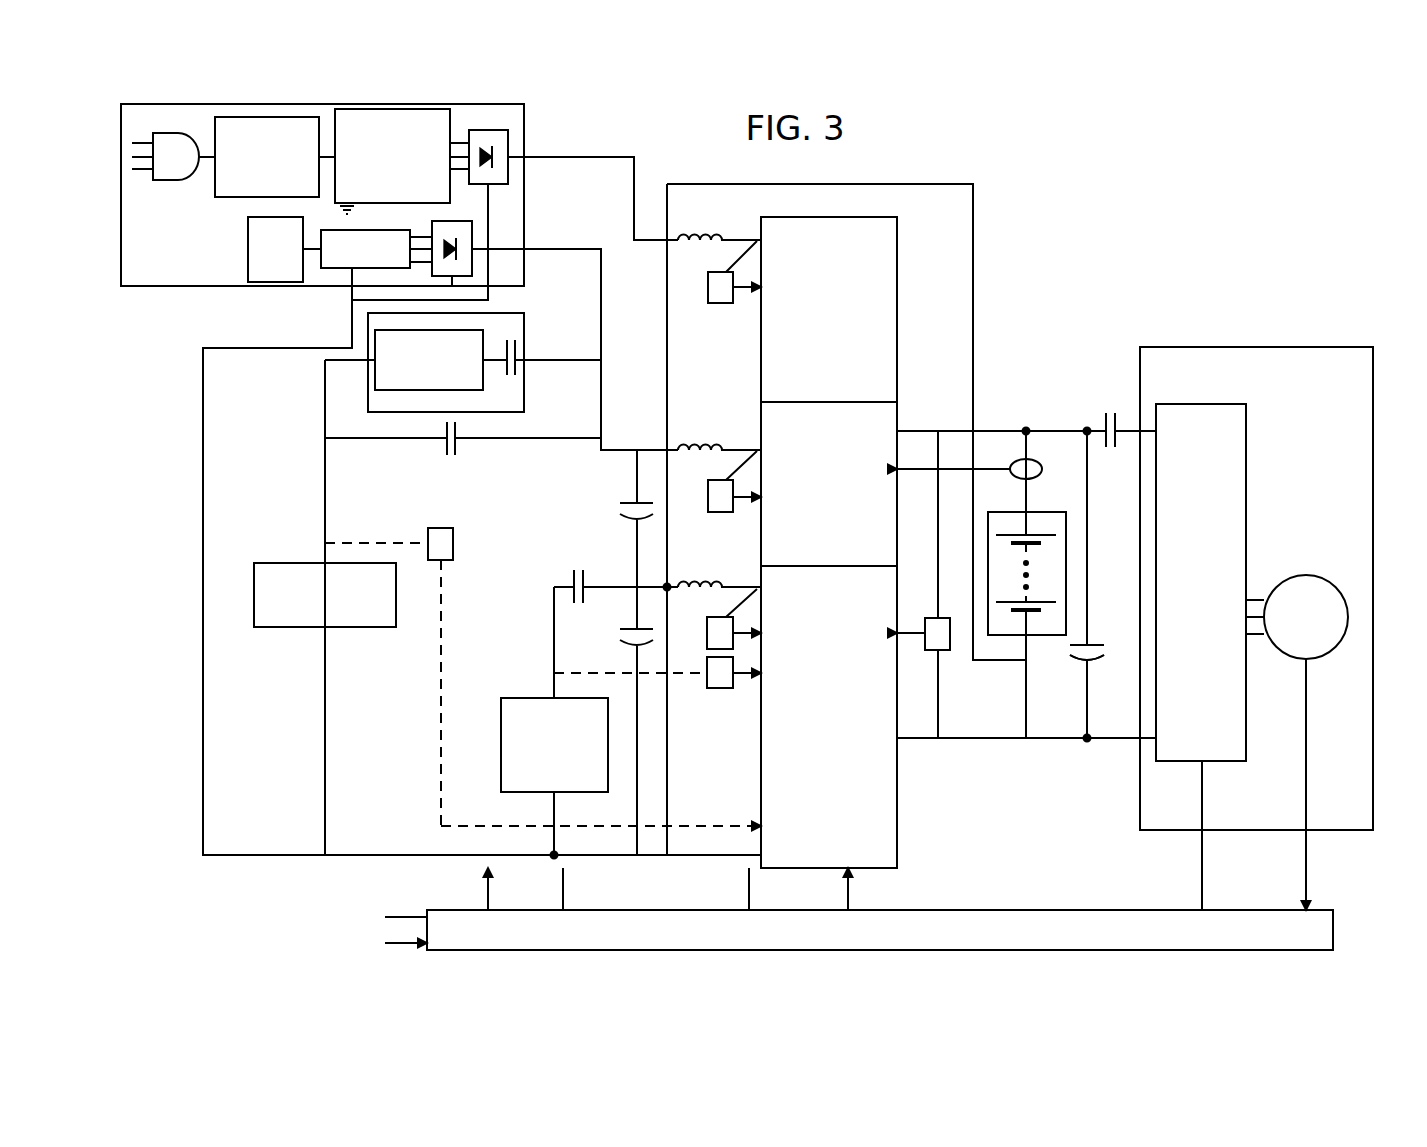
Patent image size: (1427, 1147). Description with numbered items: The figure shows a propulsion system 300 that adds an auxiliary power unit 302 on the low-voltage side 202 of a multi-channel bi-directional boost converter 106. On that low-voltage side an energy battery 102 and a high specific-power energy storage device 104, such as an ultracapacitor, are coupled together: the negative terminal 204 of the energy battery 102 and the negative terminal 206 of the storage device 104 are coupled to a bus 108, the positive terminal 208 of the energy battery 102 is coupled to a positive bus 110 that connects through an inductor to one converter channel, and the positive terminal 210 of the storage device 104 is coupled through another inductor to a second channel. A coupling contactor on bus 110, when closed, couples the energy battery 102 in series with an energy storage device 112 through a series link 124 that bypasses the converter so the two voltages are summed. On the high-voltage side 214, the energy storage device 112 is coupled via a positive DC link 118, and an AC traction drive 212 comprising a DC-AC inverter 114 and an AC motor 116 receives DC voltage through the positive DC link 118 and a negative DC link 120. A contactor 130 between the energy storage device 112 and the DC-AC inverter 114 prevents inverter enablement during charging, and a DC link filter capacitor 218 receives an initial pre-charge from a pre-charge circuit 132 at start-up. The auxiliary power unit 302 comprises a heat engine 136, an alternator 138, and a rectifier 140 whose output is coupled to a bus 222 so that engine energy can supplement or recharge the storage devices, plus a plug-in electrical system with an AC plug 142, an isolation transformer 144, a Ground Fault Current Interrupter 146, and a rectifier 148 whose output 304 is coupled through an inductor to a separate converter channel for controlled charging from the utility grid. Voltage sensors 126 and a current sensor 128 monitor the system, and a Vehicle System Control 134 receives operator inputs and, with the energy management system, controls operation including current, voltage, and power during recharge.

The propulsion system 300 is at (1070, 175).
The auxiliary power unit 302 is at (160, 288).
The output of rectifier 304 is at (508, 150).
The energy battery 102 is at (270, 628).
The high specific-power energy storage device 104 is at (502, 700).
The multi-channel bi-directional boost converter 106 is at (897, 830).
The bus 108 is at (717, 856).
The bus 110 is at (325, 476).
The energy storage device 112 is at (1043, 636).
The DC-AC inverter 114 is at (1247, 425).
The AC motor 116 is at (1337, 588).
The positive DC link 118 is at (1040, 430).
The negative DC link 120 is at (995, 739).
The series link 124 is at (948, 184).
The voltage sensors 126 is at (453, 550).
The current sensor 128 is at (1042, 466).
The contactor 130 is at (1113, 400).
The pre-charge circuit 132 is at (520, 318).
The Vehicle System Control 134 is at (1333, 917).
The heat engine 136 is at (248, 262).
The alternator 138 is at (338, 270).
The rectifier 140 is at (472, 236).
The AC plug 142 is at (168, 180).
The isolation transformer 144 is at (229, 198).
The Ground Fault Current Interrupter 146 is at (450, 118).
The rectifier 148 is at (508, 170).
The low-voltage side 202 is at (680, 862).
The negative terminal 204 is at (325, 628).
The negative terminal 206 is at (554, 792).
The positive terminal 208 is at (325, 562).
The positive terminal 210 is at (552, 697).
The AC traction drive 212 is at (1302, 347).
The high-voltage side 214 is at (988, 357).
The DC link filter capacitor 218 is at (1100, 668).
The bus 222 is at (601, 258).